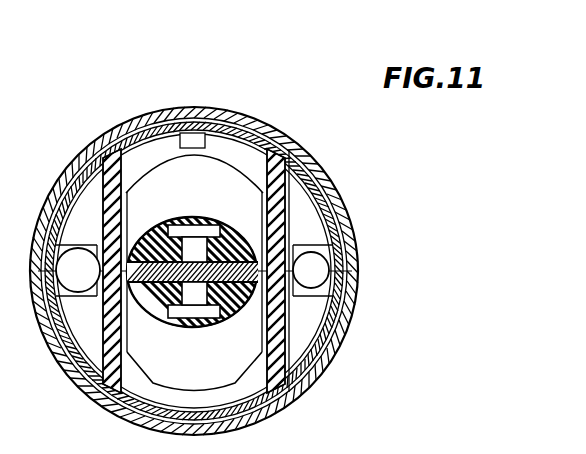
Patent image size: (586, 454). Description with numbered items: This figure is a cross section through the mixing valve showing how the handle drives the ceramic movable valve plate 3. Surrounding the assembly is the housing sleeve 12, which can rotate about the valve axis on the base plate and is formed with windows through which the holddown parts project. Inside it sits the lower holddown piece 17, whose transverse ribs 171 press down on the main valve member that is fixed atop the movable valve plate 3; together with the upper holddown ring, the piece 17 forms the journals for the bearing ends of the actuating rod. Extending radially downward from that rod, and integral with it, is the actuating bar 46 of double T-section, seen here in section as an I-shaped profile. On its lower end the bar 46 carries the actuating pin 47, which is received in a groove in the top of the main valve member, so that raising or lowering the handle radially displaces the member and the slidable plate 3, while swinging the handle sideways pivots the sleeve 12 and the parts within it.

The movable valve plate 3 is at (150, 236).
The housing sleeve 12 is at (327, 192).
The lower holddown piece 17 is at (341, 247).
The actuating bar 46 is at (181, 242).
The actuating pin 47 is at (228, 322).
The transverse ribs 171 is at (287, 151).